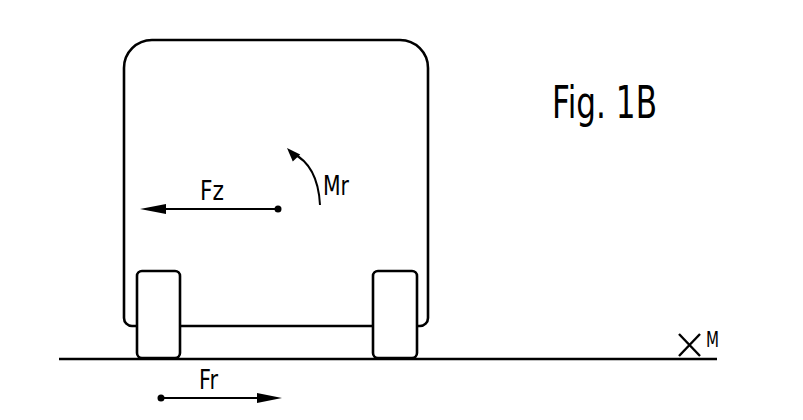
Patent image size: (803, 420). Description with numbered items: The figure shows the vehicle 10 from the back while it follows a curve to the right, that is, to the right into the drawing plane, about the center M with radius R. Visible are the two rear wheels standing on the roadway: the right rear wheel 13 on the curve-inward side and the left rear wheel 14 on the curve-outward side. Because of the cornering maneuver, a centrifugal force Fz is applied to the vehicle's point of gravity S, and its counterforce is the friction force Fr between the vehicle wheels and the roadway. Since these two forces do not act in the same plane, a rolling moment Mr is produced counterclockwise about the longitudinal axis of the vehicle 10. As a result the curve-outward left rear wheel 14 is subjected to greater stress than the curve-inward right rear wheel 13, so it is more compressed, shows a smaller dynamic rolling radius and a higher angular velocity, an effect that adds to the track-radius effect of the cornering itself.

The vehicle 10 is at (148, 78).
The right rear wheel 13 is at (400, 339).
The left rear wheel 14 is at (155, 338).